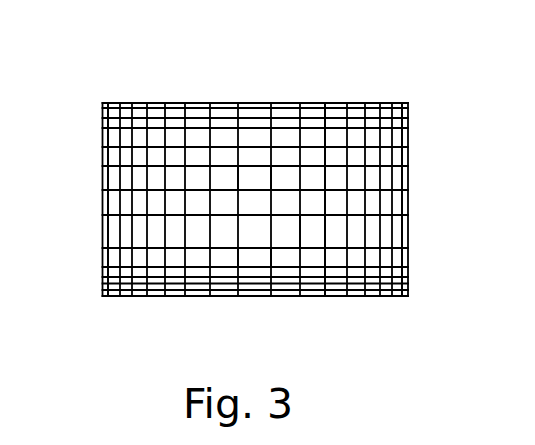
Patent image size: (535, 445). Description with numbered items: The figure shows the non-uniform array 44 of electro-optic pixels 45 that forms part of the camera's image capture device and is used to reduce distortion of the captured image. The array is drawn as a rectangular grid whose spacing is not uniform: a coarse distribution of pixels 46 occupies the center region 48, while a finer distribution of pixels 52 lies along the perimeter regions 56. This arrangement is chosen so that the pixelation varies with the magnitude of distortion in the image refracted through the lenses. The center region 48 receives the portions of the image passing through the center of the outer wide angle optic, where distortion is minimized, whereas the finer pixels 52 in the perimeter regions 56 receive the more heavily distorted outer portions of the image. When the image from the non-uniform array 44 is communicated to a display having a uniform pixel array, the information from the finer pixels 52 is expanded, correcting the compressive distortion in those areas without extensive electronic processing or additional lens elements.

The non-uniform array 44 is at (63, 44).
The electro-optic pixels 45 is at (312, 235).
The coarse distribution of pixels 46 is at (255, 258).
The center region 48 is at (248, 180).
The finer distribution of pixels 52 is at (336, 106).
The perimeter regions 56 is at (263, 106).